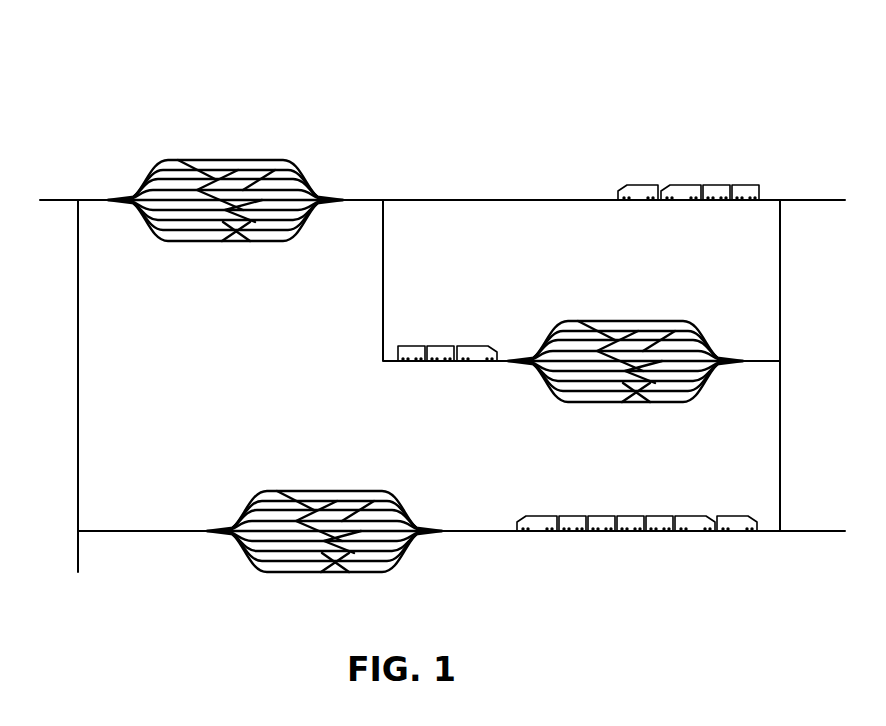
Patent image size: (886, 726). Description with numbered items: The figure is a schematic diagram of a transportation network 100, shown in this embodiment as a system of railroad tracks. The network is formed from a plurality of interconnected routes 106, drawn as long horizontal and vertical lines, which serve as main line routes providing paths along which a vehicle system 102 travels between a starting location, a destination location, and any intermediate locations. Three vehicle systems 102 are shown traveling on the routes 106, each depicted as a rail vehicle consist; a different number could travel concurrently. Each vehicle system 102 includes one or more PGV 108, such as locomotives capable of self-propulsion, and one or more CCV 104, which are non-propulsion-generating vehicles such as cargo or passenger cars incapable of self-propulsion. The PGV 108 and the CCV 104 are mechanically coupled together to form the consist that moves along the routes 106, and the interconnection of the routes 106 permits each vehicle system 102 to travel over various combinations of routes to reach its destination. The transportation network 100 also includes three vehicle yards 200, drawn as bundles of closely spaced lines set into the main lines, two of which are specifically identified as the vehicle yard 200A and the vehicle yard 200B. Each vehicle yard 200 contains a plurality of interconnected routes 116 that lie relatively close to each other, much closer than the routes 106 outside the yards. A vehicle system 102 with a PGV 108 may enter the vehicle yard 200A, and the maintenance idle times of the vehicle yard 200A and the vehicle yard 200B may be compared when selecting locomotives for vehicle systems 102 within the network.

The transportation network 100 is at (138, 65).
The vehicle system 102 is at (620, 203).
The CCV 104 is at (745, 183).
The route 106 is at (547, 203).
The PGV 108 is at (643, 183).
The route 116 is at (304, 167).
The vehicle yard 200 is at (382, 479).
The vehicle yard 200A is at (274, 140).
The vehicle yard 200B is at (690, 319).